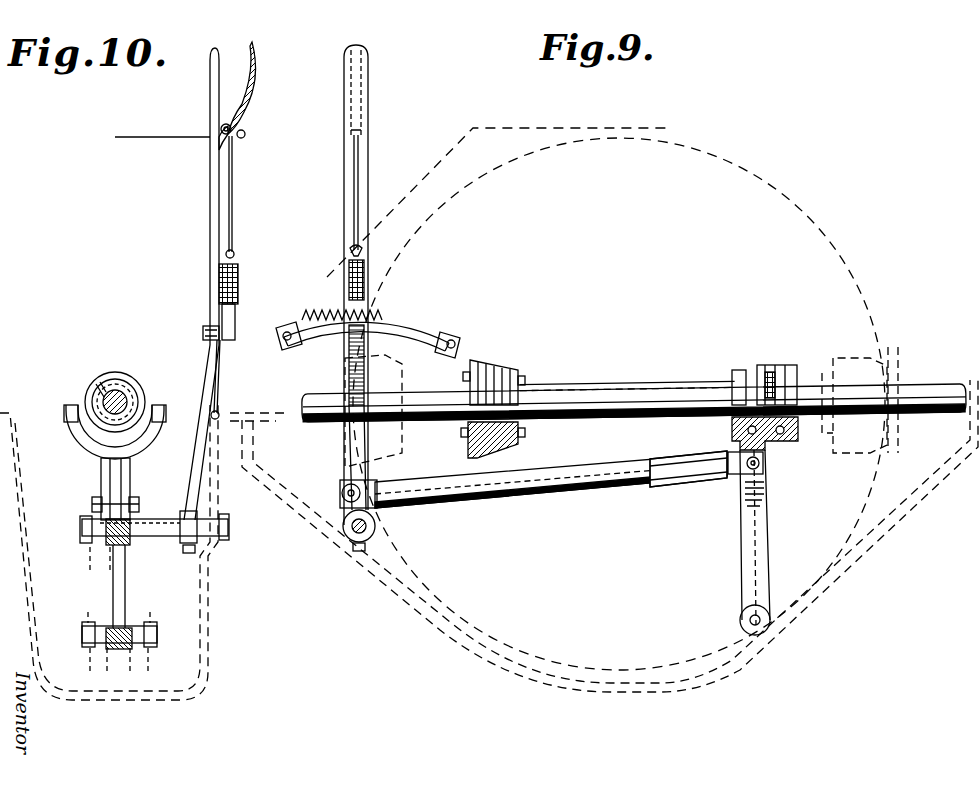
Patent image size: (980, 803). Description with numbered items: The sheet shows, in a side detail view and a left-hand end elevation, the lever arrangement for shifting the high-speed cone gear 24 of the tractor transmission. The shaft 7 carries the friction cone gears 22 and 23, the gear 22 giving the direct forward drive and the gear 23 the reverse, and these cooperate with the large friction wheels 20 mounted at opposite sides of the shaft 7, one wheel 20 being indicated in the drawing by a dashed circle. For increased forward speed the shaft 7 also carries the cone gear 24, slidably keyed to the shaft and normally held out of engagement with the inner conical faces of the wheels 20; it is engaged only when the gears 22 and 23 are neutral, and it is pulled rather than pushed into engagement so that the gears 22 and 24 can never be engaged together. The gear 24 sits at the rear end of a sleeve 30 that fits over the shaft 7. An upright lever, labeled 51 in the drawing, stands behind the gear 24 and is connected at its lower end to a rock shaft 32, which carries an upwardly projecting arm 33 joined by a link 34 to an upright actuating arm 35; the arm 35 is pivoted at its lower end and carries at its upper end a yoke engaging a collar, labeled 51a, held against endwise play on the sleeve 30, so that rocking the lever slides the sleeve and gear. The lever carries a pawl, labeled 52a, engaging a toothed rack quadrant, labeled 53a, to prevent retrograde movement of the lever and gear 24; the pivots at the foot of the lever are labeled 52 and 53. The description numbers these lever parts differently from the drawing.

In FIG. 10, the shaft 7 is at (100, 396).
In FIG. 9, the friction wheels 20 is at (832, 246).
In FIG. 9, the friction cone gear 22 is at (398, 394).
In FIG. 9, the friction cone gear 23 is at (876, 354).
In FIG. 9, the cone gear 24 is at (494, 368).
In FIG. 10, the sleeve 30 is at (122, 386).
In FIG. 9, the sleeve 30 is at (628, 391).
In FIG. 10, the rock shaft 32 is at (156, 537).
In FIG. 10, the upwardly projecting arm 33 is at (94, 506).
In FIG. 10, the link 34 is at (102, 480).
In FIG. 9, the link 34 is at (563, 488).
In FIG. 10, the upright actuating arm 35 is at (72, 435).
In FIG. 9, the upright actuating arm 35 is at (744, 529).
In FIG. 10, the lever arm 51 is at (212, 193).
In FIG. 9, the lever arm 51 is at (370, 178).
In FIG. 9, the collar 51a is at (746, 370).
In FIG. 9, the hub pivot 52 is at (377, 528).
In FIG. 10, the rack 52a is at (270, 287).
In FIG. 9, the rack 52a is at (372, 308).
In FIG. 9, the pivot 53 is at (346, 512).
In FIG. 10, the arc segment 53a is at (236, 322).
In FIG. 9, the arc segment 53a is at (430, 328).